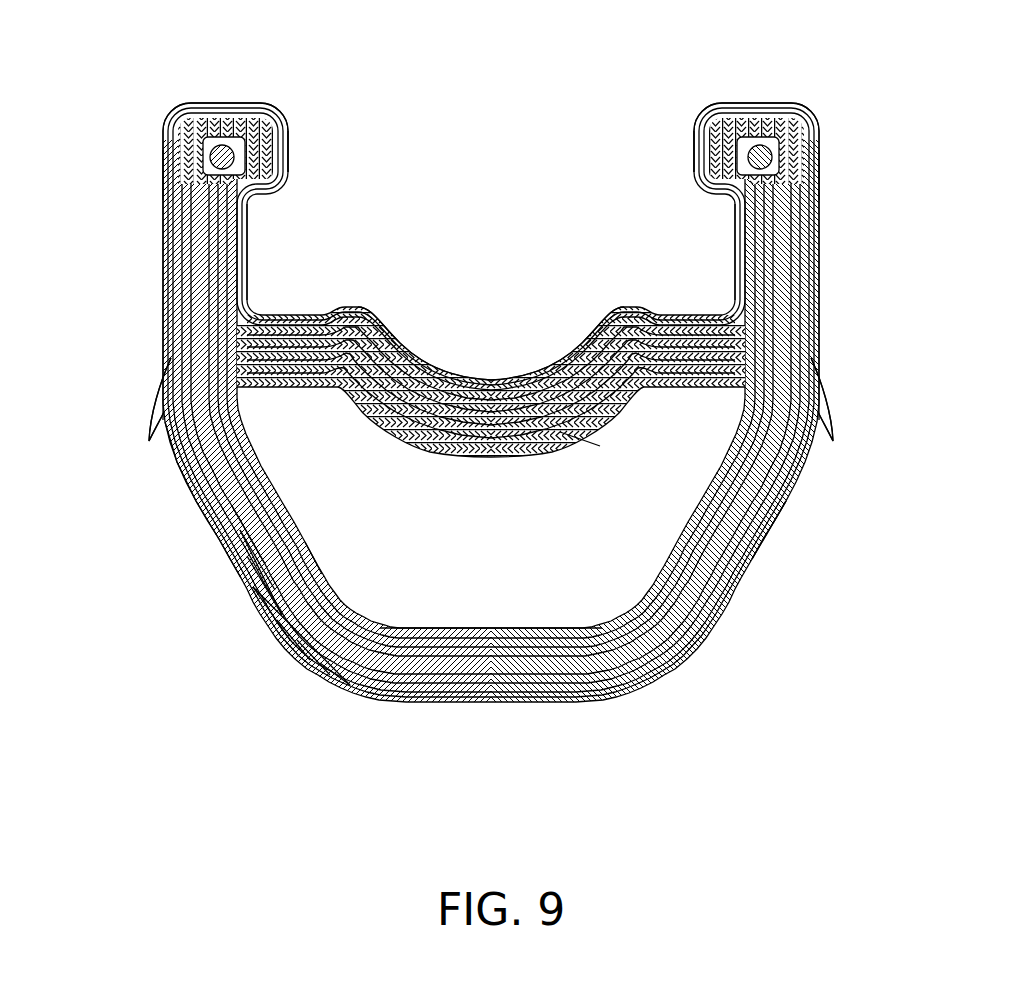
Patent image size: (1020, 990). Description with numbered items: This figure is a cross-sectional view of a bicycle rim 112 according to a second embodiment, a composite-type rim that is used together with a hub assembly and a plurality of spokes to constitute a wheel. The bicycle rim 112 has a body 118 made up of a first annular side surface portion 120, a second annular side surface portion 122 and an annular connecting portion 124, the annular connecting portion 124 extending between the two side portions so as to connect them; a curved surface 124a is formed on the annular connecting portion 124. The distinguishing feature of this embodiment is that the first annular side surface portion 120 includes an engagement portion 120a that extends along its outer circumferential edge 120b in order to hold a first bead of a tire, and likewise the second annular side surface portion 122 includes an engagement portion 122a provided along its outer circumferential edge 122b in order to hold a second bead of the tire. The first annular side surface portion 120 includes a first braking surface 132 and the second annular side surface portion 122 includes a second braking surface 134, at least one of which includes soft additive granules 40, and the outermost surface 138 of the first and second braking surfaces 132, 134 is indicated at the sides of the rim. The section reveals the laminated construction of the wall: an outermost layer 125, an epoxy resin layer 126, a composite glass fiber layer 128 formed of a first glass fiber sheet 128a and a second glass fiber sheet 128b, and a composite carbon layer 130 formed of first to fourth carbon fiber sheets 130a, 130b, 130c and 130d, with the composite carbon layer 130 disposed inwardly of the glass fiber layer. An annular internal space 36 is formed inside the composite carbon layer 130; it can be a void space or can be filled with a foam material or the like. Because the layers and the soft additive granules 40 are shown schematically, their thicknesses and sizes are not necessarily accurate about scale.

The bicycle rim 112 is at (193, 70).
The body 118 is at (838, 494).
The first annular side surface portion 120 is at (308, 543).
The engagement portion 120a is at (291, 150).
The outer circumferential edge 120b is at (232, 103).
The second annular side surface portion 122 is at (778, 533).
The engagement portion 122a is at (691, 145).
The outer circumferential edge 122b is at (762, 103).
The annular connecting portion 124 is at (580, 439).
The curved surface 124a is at (503, 379).
The outermost layer 125 is at (188, 477).
The epoxy resin layer 126 is at (208, 502).
The composite glass fiber layer 128 is at (153, 531).
The first glass fiber sheet 128a is at (240, 530).
The second glass fiber sheet 128b is at (247, 556).
The composite carbon layer 130 is at (153, 690).
The first carbon fiber sheet 130a is at (253, 587).
The second carbon fiber sheet 130b is at (277, 620).
The third carbon fiber sheet 130c is at (297, 640).
The fourth carbon fiber sheet 130d is at (320, 663).
The first braking surface 132 is at (147, 150).
The second braking surface 134 is at (835, 150).
The outermost surface 138 is at (170, 148).
The internal space 36 is at (506, 524).
The soft additive granules 40 is at (491, 414).